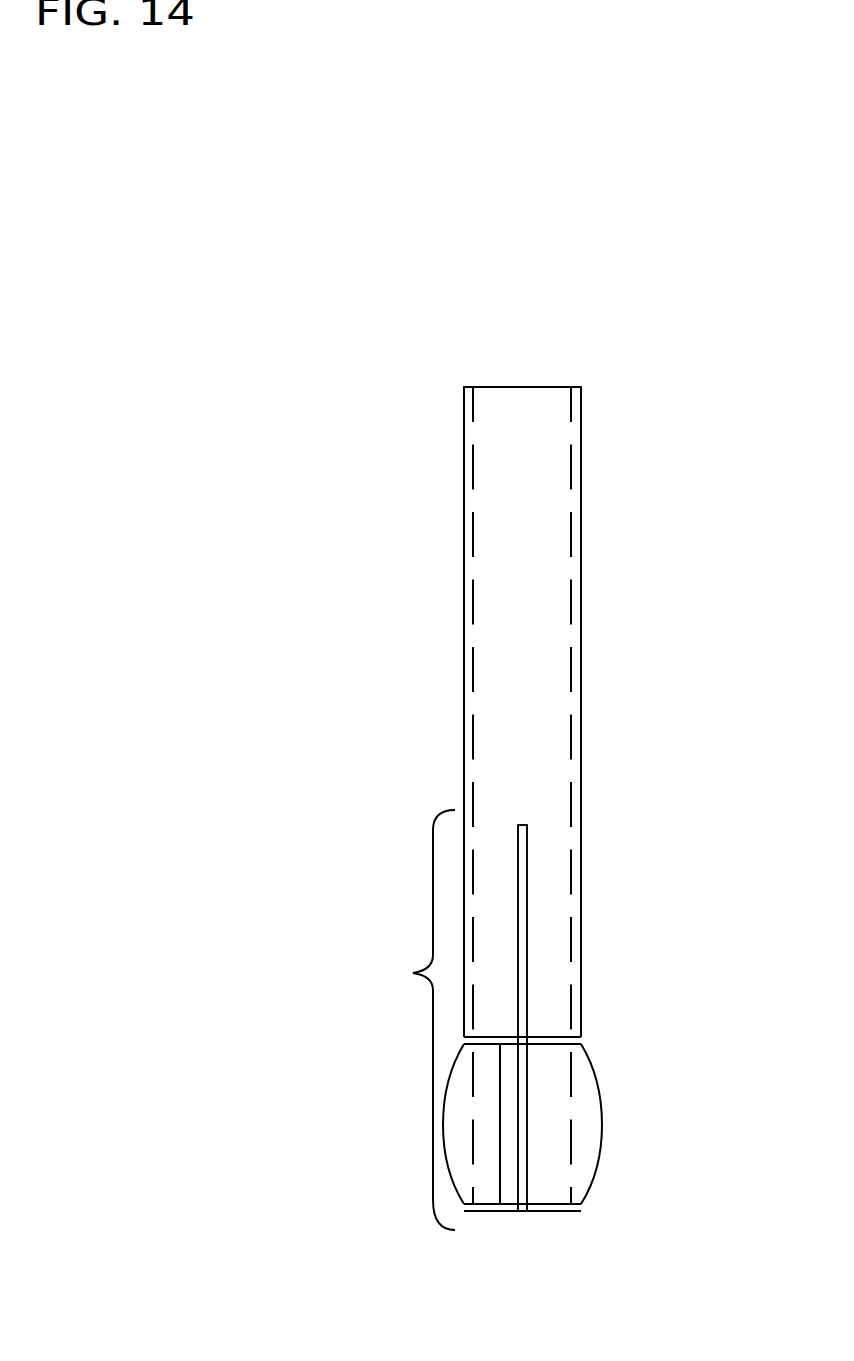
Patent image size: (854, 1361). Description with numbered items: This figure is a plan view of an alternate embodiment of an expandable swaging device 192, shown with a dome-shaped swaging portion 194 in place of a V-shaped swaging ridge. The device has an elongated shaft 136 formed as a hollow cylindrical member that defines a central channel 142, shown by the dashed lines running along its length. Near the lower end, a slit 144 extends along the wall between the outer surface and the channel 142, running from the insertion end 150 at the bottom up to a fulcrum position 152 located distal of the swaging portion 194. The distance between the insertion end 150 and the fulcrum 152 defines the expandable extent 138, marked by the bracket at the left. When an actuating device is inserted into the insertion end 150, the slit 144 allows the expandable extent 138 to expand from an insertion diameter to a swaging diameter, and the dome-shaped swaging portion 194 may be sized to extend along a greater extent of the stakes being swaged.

The shaft 136 is at (584, 795).
The expandable swaging device 192 is at (544, 842).
The fulcrum position 152 is at (524, 823).
The slits 144 is at (522, 913).
The central channel 142 is at (572, 944).
The dome-shaped swaging portion 194 is at (580, 1167).
The insertion end 150 is at (588, 1210).
The expandable extent 138 is at (432, 873).